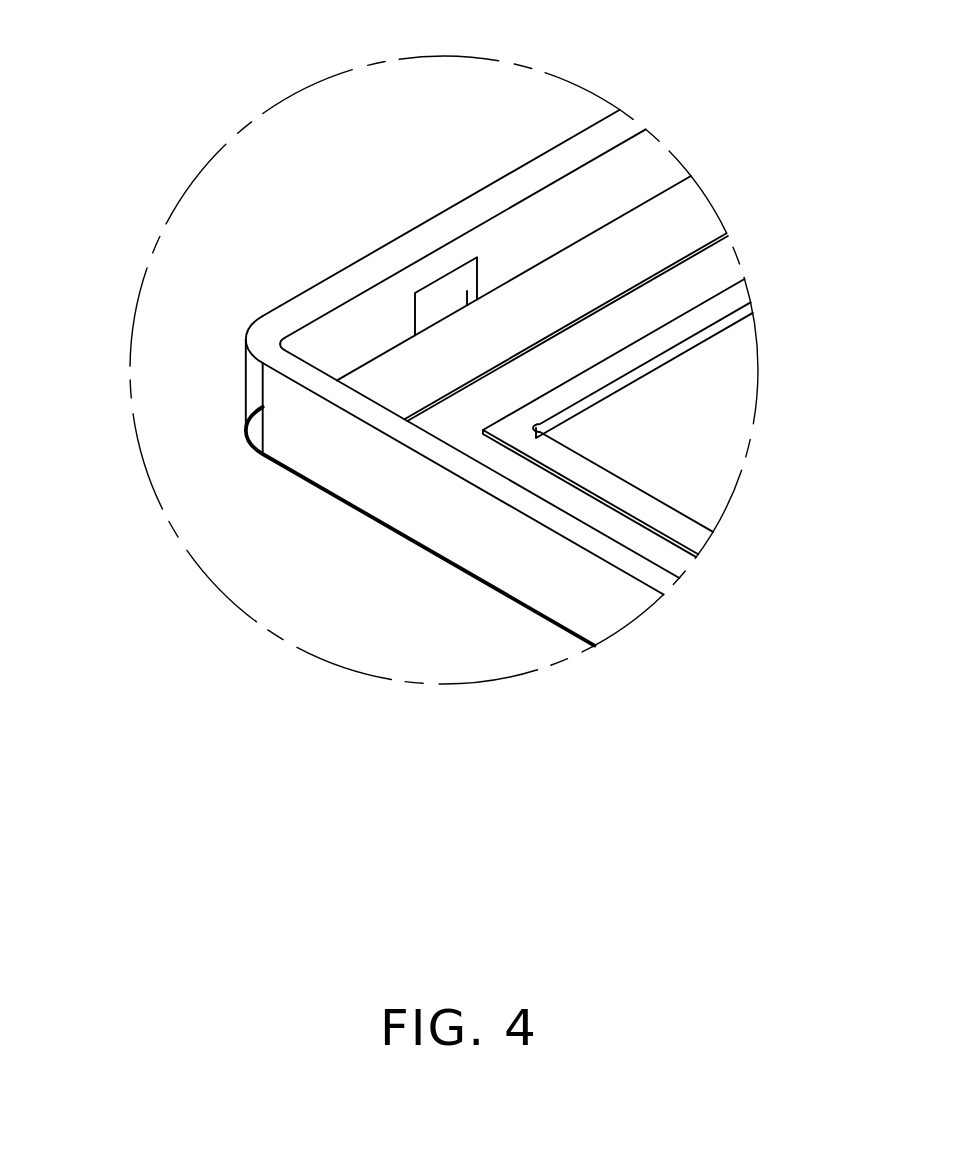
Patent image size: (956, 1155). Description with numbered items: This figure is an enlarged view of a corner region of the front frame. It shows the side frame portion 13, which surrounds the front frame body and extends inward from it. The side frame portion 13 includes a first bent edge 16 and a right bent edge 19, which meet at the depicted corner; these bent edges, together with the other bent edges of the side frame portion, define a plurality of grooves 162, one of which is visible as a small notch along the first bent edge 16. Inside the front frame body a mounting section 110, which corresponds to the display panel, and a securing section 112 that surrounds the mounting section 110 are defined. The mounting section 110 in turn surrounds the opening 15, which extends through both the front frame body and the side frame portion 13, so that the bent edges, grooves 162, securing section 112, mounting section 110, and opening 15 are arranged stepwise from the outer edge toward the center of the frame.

The side frame portion 13 is at (268, 399).
The opening 15 is at (717, 418).
The first bent edge 16 is at (583, 157).
The right bent edge 19 is at (548, 597).
The mounting section 110 is at (713, 273).
The securing section 112 is at (683, 220).
The groove 162 is at (440, 292).